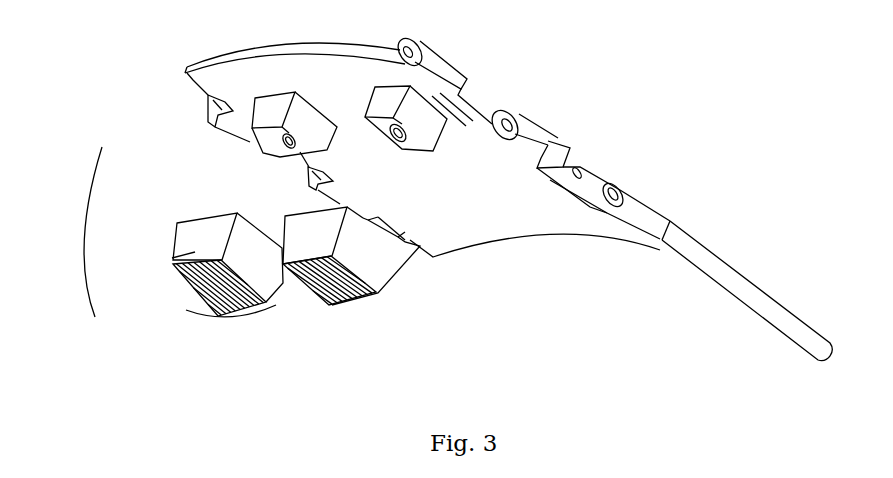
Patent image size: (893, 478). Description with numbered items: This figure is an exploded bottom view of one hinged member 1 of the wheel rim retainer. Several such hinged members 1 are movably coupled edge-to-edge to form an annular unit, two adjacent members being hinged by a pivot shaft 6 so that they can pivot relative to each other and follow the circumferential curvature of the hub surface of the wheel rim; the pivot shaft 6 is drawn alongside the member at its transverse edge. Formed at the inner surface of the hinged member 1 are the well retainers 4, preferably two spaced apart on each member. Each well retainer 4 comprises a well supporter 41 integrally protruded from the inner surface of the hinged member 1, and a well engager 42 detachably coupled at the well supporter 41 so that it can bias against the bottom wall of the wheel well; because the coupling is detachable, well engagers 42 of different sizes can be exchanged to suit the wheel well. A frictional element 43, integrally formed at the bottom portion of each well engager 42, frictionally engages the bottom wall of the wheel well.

The hinged member 1 is at (557, 137).
The well retainer 4 is at (83, 222).
The well supporter 41 is at (263, 137).
The well engager 42 is at (305, 244).
The frictional element 43 is at (330, 299).
The pivot shaft 6 is at (714, 277).